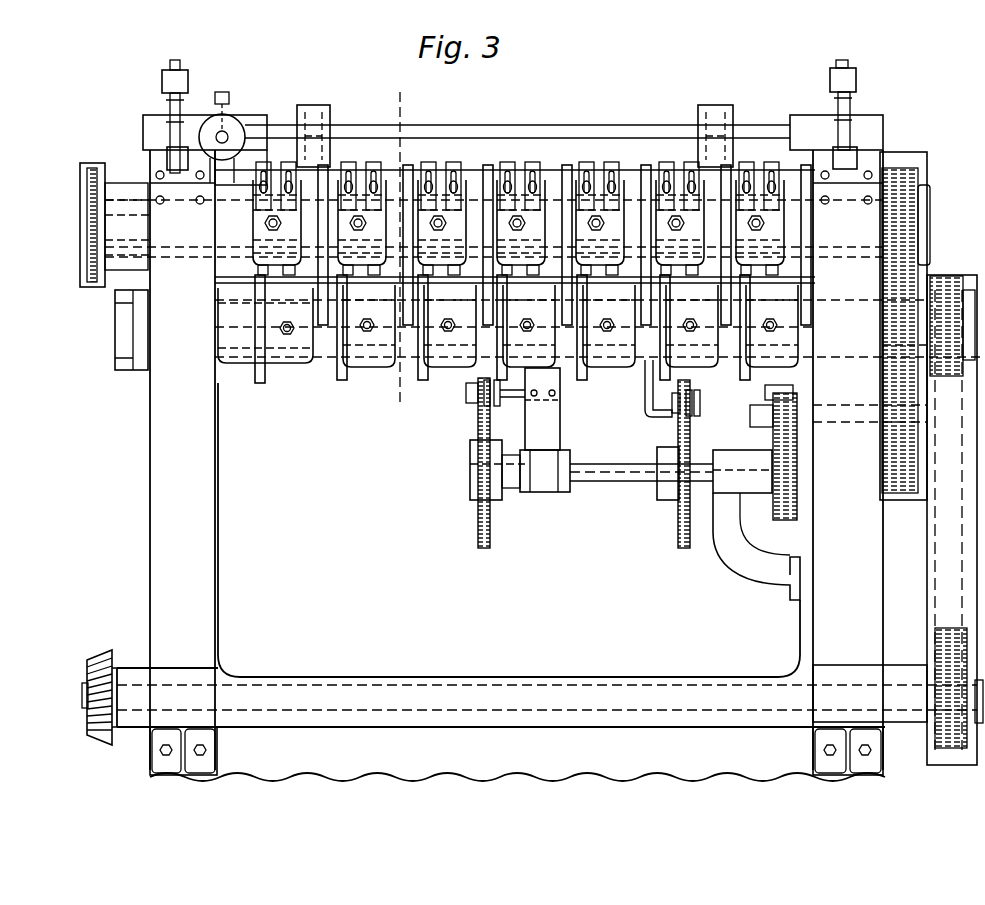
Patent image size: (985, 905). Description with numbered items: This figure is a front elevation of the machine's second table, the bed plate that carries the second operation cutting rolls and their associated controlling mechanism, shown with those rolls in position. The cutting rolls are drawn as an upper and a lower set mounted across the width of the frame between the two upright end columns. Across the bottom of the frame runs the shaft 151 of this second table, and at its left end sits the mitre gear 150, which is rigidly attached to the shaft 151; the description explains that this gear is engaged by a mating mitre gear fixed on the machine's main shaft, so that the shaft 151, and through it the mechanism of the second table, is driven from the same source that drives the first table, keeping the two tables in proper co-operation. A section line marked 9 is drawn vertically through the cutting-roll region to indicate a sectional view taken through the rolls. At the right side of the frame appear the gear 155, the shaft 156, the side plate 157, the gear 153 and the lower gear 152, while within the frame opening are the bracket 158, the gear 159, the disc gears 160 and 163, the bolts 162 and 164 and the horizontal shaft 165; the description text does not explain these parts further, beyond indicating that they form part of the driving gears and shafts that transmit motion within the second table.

The section line 9- 9 is at (410, 401).
The mitre gear 150 is at (100, 662).
The shaft 151 is at (503, 692).
The lower gear 152 is at (955, 745).
The upper gear 153 is at (945, 283).
The vertical gear 155 is at (900, 172).
The shaft 156 is at (885, 352).
The side plate 157 is at (948, 558).
The bracket 158 is at (780, 405).
The spur gear 159 is at (797, 510).
The disc gear 160 is at (686, 549).
The bolt 162 is at (690, 384).
The disc gear 163 is at (482, 549).
The bolt 164 is at (486, 374).
The shaft 165 is at (606, 480).